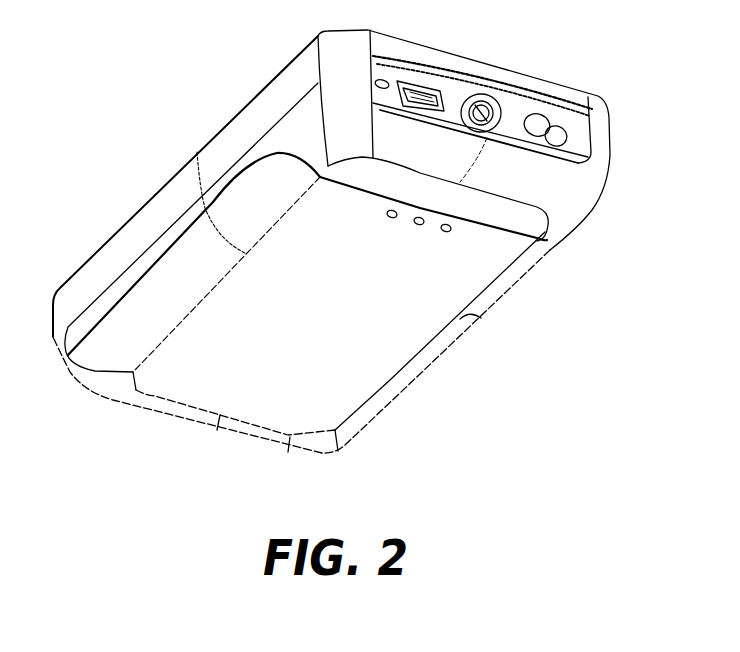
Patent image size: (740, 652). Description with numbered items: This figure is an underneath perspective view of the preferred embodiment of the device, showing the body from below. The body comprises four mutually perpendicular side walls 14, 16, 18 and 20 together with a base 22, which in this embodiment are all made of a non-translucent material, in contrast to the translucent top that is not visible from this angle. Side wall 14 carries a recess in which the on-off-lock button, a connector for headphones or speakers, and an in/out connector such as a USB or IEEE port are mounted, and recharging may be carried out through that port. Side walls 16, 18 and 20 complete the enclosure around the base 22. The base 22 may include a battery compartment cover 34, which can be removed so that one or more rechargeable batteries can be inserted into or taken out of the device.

The side wall 14 is at (497, 70).
The side wall 20 is at (177, 183).
The base 22 is at (418, 288).
The side wall 16 is at (460, 337).
The side wall 18 is at (188, 425).
The battery compartment cover 34 is at (333, 370).